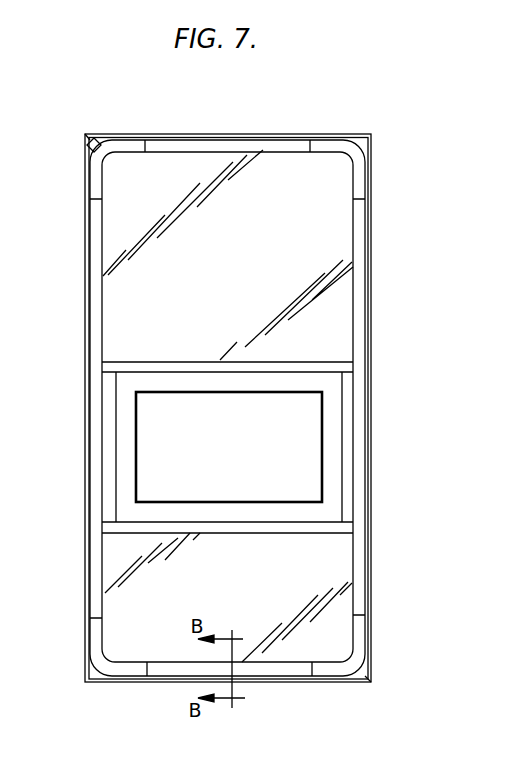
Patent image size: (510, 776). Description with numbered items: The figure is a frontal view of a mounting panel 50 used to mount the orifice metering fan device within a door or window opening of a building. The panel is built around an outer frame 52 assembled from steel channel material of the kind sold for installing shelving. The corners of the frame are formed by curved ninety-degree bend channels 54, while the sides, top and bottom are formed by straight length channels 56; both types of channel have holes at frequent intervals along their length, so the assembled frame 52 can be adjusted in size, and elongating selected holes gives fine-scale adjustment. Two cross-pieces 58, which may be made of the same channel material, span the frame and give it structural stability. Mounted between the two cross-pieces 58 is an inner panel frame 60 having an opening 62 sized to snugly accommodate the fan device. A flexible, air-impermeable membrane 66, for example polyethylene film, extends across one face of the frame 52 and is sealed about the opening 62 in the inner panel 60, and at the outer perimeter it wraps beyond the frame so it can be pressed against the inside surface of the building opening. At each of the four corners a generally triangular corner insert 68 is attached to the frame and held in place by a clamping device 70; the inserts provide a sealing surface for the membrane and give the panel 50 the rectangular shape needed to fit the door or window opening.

The mounting panel 50 is at (386, 366).
The outer frame 52 is at (242, 134).
The curved 90° bend channels 54 is at (333, 143).
The straight length channels 56 is at (273, 146).
The cross-pieces 58 is at (137, 366).
The inner panel frame 60 is at (122, 460).
The opening 62 is at (303, 456).
The membrane 66 is at (328, 247).
The corner insert 68 is at (88, 150).
The clamping device 70 is at (87, 147).